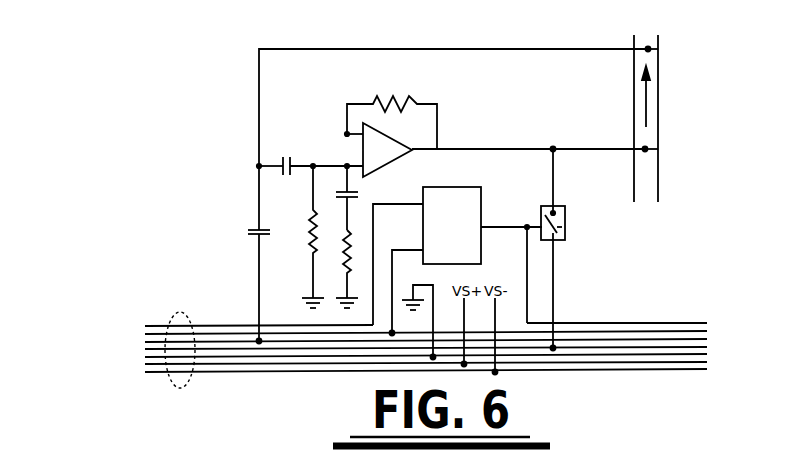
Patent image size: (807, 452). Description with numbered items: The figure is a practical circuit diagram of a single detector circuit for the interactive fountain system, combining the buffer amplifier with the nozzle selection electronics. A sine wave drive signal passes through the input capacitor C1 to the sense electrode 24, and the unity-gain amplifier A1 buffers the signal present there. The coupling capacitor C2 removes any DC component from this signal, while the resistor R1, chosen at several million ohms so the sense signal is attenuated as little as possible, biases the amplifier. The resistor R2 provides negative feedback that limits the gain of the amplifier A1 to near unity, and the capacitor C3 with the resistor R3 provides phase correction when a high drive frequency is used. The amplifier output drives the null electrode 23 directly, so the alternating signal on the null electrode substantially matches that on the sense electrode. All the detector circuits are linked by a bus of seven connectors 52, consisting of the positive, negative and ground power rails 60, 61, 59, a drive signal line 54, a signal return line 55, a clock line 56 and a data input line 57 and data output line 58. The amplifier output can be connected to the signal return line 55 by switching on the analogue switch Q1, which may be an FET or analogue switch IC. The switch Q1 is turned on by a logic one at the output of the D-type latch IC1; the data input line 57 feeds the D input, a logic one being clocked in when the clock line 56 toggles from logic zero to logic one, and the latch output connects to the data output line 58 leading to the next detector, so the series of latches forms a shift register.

The unity-gain amplifier A1 is at (361, 126).
The resistor R2 is at (380, 92).
The input capacitor C1 is at (252, 227).
The coupling capacitor C2 is at (282, 153).
The capacitor C3 is at (338, 183).
The resistor R1 is at (300, 250).
The resistor R3 is at (337, 263).
The D-type latch IC1 is at (458, 185).
The analogue switch Q1 is at (568, 225).
The null electrode 23 is at (647, 148).
The sense electrode 24 is at (650, 48).
The bus of seven connectors 52 is at (175, 315).
The drive signal line 54 is at (145, 342).
The signal return line 55 is at (145, 349).
The clock line 56 is at (145, 334).
The data input line 57 is at (145, 326).
The data output line 58 is at (707, 323).
The ground power rail 59 is at (145, 357).
The positive power rail 60 is at (145, 364).
The negative power rail 61 is at (145, 372).